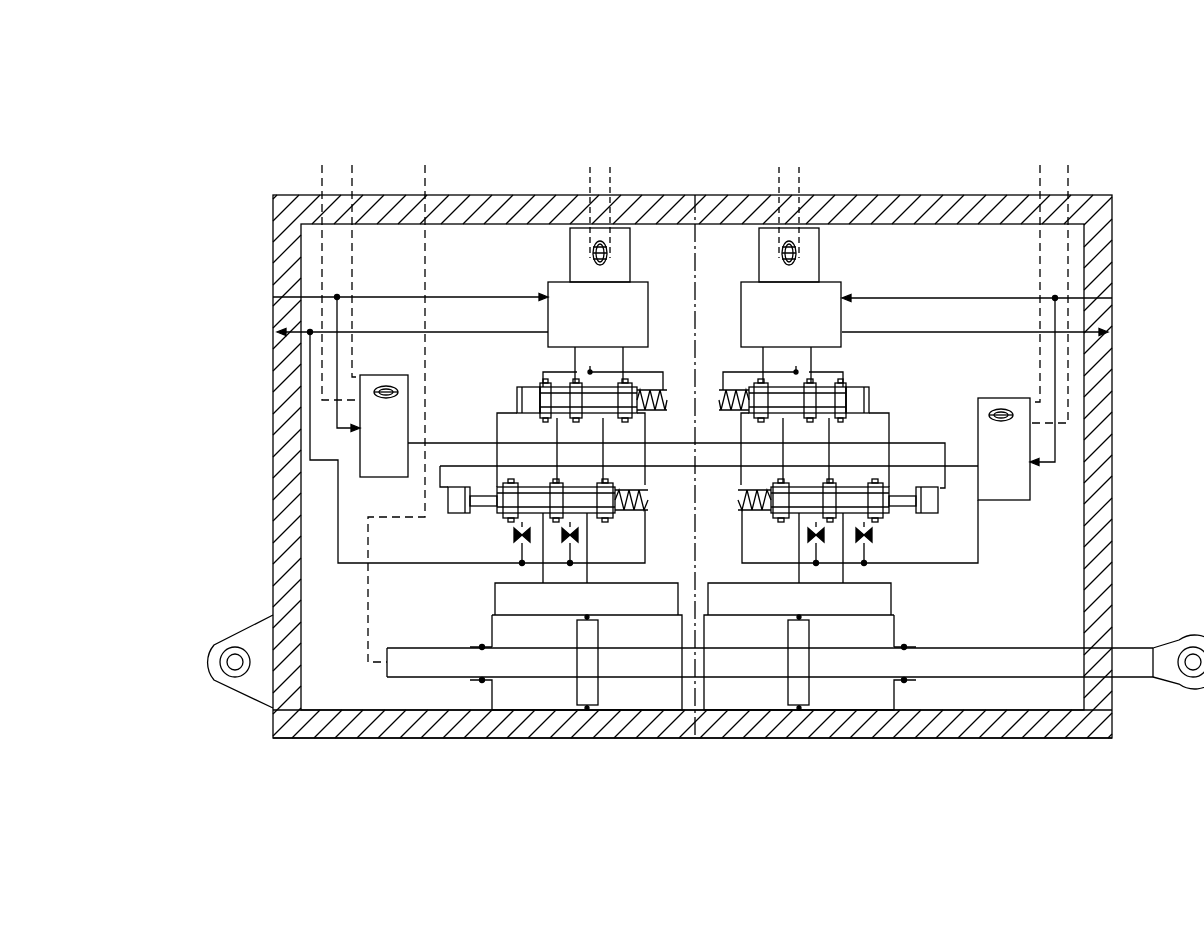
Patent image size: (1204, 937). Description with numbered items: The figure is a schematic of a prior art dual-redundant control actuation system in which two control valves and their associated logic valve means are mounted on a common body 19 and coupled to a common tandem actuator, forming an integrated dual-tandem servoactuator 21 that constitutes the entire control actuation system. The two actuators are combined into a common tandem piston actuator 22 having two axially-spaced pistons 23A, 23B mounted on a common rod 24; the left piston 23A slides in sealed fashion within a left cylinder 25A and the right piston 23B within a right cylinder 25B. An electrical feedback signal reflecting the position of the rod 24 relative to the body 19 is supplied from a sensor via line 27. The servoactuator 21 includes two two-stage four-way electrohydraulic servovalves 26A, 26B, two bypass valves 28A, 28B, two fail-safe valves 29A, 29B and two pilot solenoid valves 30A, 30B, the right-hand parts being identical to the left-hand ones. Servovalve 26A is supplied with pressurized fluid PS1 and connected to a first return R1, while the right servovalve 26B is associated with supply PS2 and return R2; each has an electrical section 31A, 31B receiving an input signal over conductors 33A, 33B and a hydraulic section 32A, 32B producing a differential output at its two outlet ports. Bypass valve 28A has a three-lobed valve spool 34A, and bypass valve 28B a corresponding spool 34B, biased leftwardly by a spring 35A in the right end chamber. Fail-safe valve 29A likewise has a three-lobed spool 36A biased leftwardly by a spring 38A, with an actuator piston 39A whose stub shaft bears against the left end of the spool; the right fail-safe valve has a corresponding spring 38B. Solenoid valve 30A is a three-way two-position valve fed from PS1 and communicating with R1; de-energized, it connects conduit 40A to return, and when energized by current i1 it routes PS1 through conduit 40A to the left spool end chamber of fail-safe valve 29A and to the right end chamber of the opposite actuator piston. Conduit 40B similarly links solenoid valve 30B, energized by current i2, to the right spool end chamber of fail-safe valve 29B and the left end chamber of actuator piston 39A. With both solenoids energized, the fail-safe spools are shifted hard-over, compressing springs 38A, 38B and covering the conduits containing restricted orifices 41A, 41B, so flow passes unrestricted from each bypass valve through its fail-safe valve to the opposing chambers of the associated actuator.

The common body 19 is at (663, 448).
The integrated dual-tandem servoactuator 21 is at (705, 437).
The common tandem piston actuator 22 is at (692, 750).
The left piston 23A is at (587, 692).
The right piston 23B is at (775, 706).
The common rod 24 is at (706, 658).
The left cylinder 25A is at (546, 689).
The right cylinder 25B is at (833, 690).
The two-stage four-way electrohydraulic servovalve 26A is at (581, 237).
The two-stage four-way electrohydraulic servovalve 26B is at (816, 237).
The feedback line 27 is at (441, 400).
The bypass valve 28A is at (566, 416).
The bypass valve 28B is at (846, 416).
The fail-safe valve 29A is at (477, 447).
The fail-safe valve 29B is at (887, 531).
The pilot solenoid valve 30A is at (367, 441).
The pilot solenoid valve 30B is at (987, 466).
The electrical section 31A is at (606, 252).
The electrical section 31B is at (787, 258).
The hydraulic section 32A is at (574, 311).
The hydraulic section 32B is at (767, 311).
The conductors 33A is at (611, 170).
The conductors 33B is at (831, 192).
The three-lobed valve spool 34A is at (518, 394).
The three-lobed valve spool 34B is at (866, 400).
The spring 35A is at (646, 362).
The three-lobed valve spool 36A is at (522, 468).
The spring 38A is at (534, 531).
The spring 38B is at (757, 513).
The actuator piston 39A is at (407, 498).
The conduit 40A is at (721, 453).
The conduit 40B is at (709, 486).
The restricted orifice 41A is at (493, 570).
The restricted orifice 41B is at (903, 564).
The energization current i1 is at (341, 268).
The energization current i2 is at (1049, 279).
The pressurized hydraulic fluid source PS1 is at (377, 358).
The pressurized hydraulic fluid source PS2 is at (1012, 375).
The first fluid return R1 is at (379, 334).
The fluid return R2 is at (1009, 334).